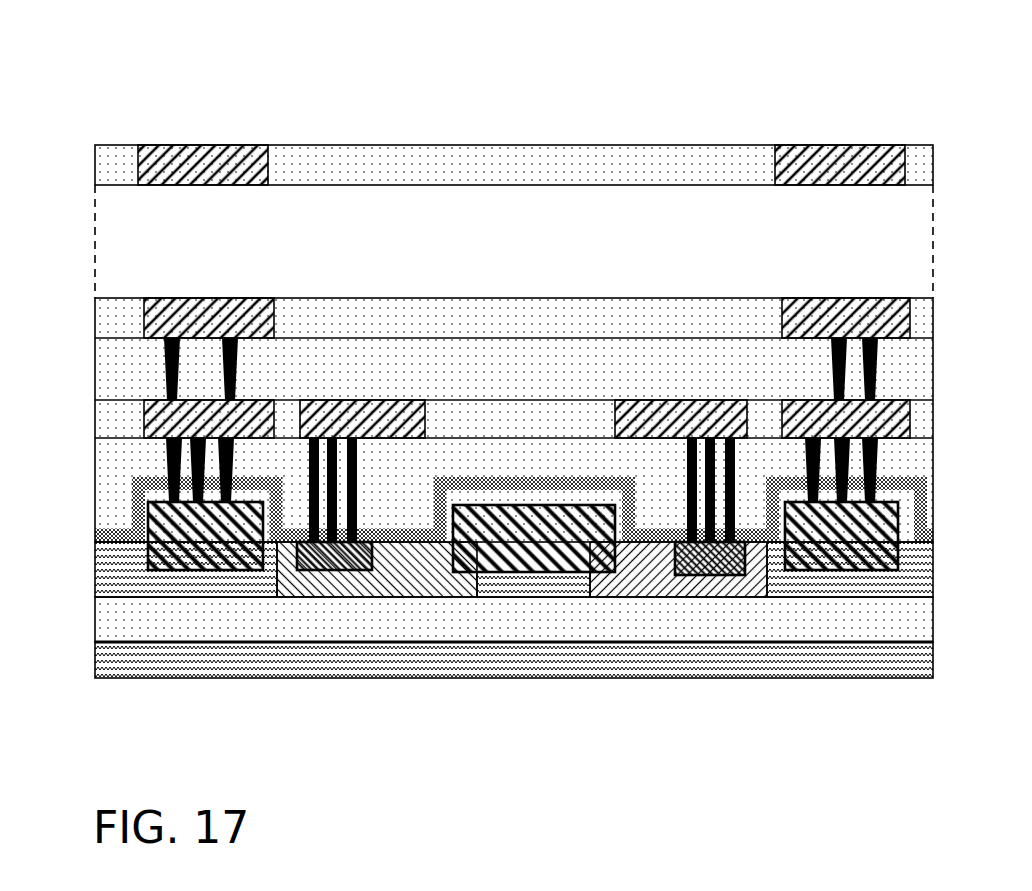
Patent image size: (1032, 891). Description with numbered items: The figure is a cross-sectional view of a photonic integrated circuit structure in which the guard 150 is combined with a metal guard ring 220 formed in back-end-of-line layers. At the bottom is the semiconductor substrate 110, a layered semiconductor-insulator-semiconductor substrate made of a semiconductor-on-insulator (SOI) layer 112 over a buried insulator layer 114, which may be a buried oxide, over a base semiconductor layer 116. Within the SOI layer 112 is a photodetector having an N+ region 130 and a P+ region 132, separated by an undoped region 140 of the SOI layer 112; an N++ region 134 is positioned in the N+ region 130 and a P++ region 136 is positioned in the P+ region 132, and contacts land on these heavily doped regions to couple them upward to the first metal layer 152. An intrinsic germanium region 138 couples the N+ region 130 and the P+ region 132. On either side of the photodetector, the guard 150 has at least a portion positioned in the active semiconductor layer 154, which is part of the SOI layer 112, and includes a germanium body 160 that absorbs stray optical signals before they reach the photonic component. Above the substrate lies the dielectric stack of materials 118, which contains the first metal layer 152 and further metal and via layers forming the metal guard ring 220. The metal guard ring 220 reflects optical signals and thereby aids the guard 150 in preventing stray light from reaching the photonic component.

The metal guard ring 220 is at (207, 296).
The dielectric stack of materials 118 is at (473, 358).
The semiconductor substrate 110 is at (474, 658).
The germanium body 160 is at (215, 520).
The guard 150 is at (250, 498).
The germanium region 138 is at (527, 530).
The first metal layer 152 is at (555, 422).
The semiconductor-on-insulator (SOI) layer 112 is at (514, 658).
The active semiconductor layer 154 is at (858, 708).
The base semiconductor layer 116 is at (122, 657).
The N++ region 134 is at (323, 570).
The N+ region 130 is at (430, 575).
The undoped region 140 is at (543, 583).
The P+ region 132 is at (653, 582).
The P++ region 136 is at (712, 577).
The buried insulator layer 114 is at (792, 620).